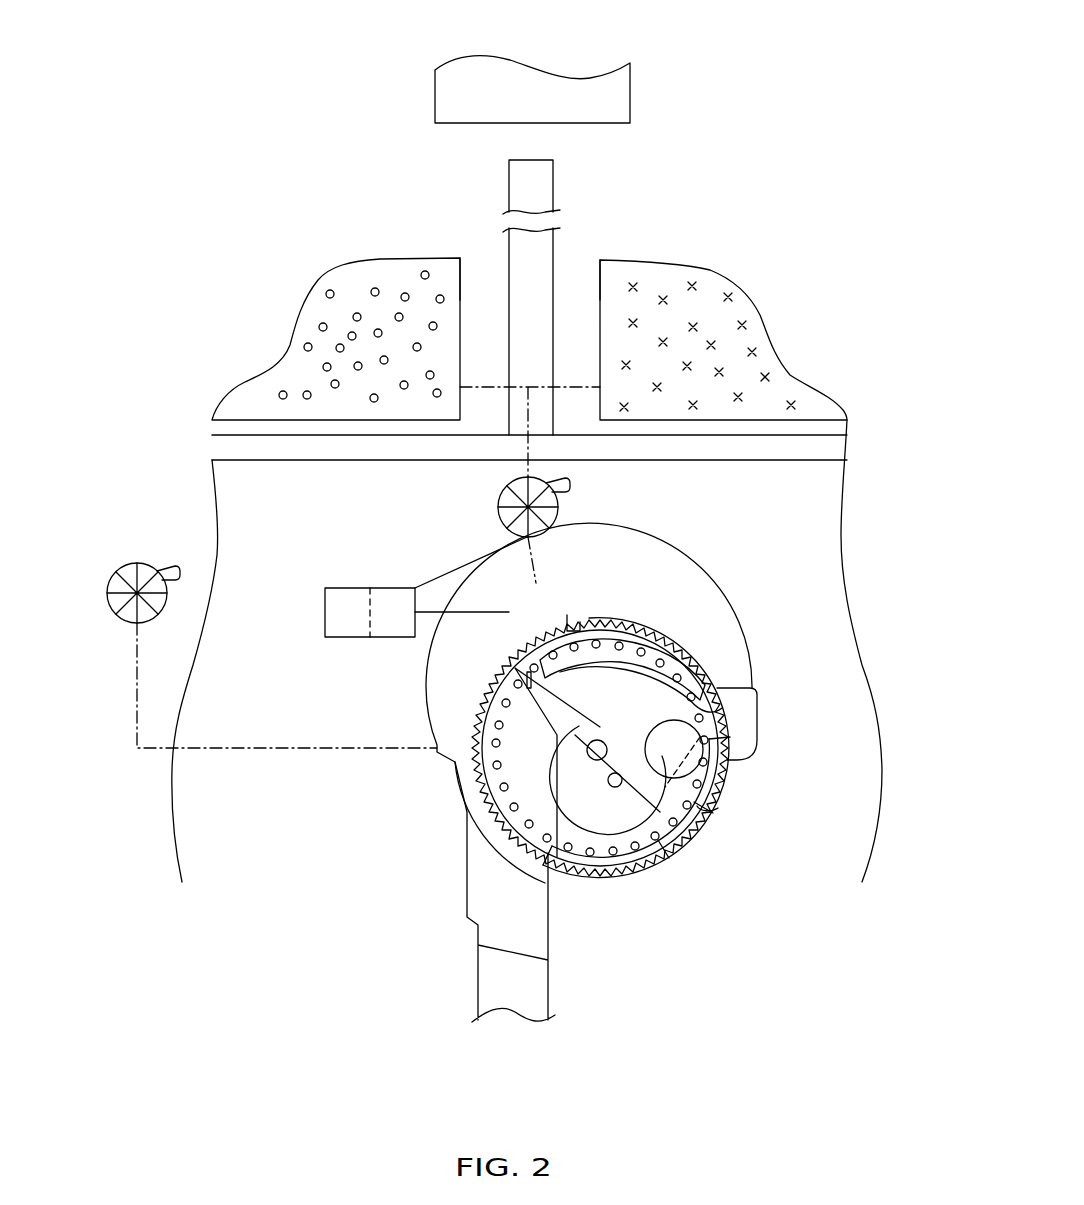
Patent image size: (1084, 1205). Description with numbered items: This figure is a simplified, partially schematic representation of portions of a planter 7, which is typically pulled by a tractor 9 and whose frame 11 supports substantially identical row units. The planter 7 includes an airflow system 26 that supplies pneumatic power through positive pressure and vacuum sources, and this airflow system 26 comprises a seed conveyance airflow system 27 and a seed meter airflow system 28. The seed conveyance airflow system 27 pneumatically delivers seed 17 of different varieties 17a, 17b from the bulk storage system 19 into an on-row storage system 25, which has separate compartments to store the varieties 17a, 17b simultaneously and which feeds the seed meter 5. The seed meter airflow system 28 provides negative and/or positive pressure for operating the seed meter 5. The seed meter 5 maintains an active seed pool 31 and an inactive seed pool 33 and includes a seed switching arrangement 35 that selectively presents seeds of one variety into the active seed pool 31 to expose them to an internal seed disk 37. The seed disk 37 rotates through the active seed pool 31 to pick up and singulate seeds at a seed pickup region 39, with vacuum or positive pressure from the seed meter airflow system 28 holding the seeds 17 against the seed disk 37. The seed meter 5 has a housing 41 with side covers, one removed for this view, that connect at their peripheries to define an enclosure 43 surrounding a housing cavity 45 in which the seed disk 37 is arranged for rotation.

The seed meter 5 is at (802, 738).
The planter 7 is at (850, 355).
The tractor 9 is at (640, 98).
The frame 11 is at (830, 456).
The seed 17 is at (394, 282).
The first seed variety 17a is at (320, 322).
The second seed variety 17b is at (756, 351).
The bulk storage system 19 is at (726, 250).
The on-row storage system 25 is at (345, 576).
The airflow system 26 is at (491, 522).
The seed conveyance airflow system 27 is at (493, 497).
The seed meter airflow system 28 is at (135, 690).
The active seed pool 31 is at (656, 796).
The inactive seed pool 33 is at (621, 822).
The seed switching arrangement 35 is at (583, 842).
The seed disk 37 is at (697, 706).
The seed pickup region 39 is at (702, 808).
The housing 41 is at (718, 606).
The enclosure 43 is at (642, 592).
The housing cavity 45 is at (542, 634).